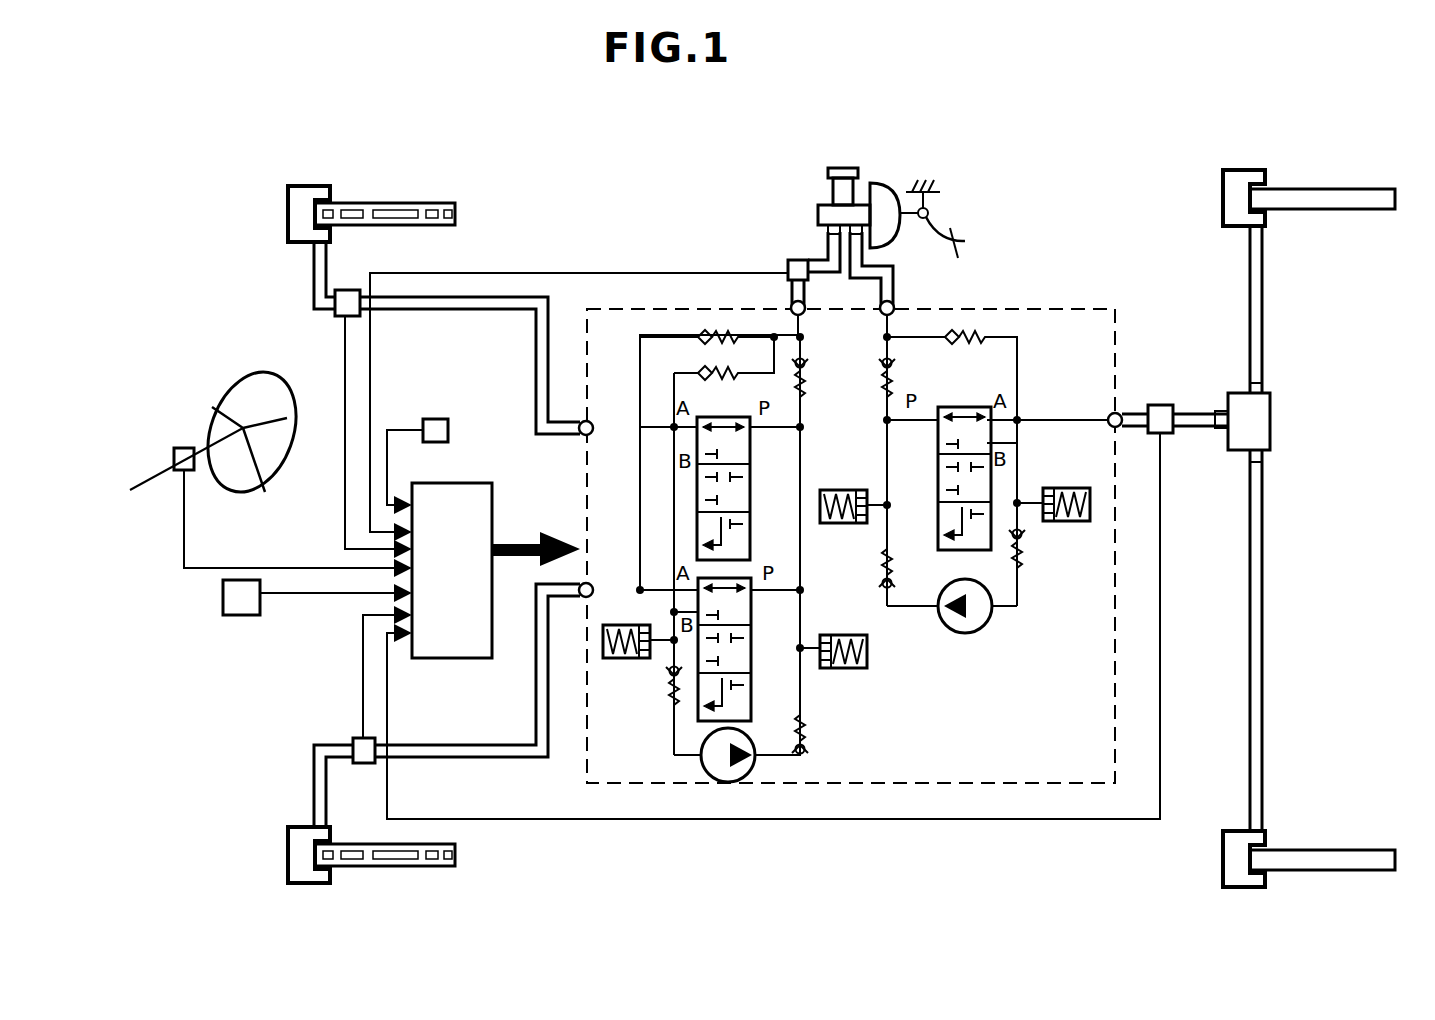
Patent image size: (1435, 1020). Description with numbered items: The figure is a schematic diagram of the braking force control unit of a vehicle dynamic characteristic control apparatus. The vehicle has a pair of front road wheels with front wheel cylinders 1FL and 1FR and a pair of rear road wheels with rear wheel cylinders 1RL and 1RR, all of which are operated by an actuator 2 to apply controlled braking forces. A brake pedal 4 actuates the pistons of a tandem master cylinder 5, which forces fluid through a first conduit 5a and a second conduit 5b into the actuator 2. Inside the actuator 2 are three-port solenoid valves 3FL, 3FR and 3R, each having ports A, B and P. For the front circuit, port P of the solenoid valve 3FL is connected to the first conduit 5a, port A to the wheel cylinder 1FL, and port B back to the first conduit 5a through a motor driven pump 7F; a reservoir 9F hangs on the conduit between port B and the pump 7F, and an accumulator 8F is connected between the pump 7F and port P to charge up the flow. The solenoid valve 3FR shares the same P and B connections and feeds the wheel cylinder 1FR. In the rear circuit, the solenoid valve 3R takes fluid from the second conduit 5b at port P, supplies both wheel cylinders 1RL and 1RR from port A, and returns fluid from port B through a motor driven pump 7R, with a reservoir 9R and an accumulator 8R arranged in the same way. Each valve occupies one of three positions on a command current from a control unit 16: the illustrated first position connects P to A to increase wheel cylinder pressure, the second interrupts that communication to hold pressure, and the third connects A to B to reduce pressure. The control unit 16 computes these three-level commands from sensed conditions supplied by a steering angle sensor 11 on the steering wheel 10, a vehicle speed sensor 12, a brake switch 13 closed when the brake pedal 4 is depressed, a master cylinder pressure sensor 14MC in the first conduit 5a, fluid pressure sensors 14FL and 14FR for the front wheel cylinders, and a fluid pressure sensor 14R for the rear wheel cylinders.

The front wheel cylinder 1FR is at (318, 190).
The front wheel cylinder 1FL is at (312, 830).
The rear wheel cylinder 1RR is at (1250, 178).
The rear wheel cylinder 1RL is at (1262, 836).
The actuator 2 is at (940, 784).
The solenoid valve 3FR is at (696, 535).
The solenoid valve 3FL is at (697, 700).
The solenoid valve 3R is at (958, 554).
The brake pedal 4 is at (965, 241).
The tandem master cylinder 5 is at (839, 219).
The first conduit 5a is at (830, 250).
The second conduit 5b is at (893, 258).
The motor driven pump 7F is at (706, 775).
The motor driven pump 7R is at (985, 626).
The accumulator 8F is at (836, 635).
The accumulator 8R is at (842, 490).
The reservoir 9F is at (618, 660).
The reservoir 9R is at (1060, 488).
The steering wheel 10 is at (232, 374).
The steering angle sensor 11 is at (183, 447).
The vehicle speed sensor 12 is at (438, 418).
The brake switch 13 is at (238, 616).
The fluid pressure sensor 14FR is at (341, 318).
The fluid pressure sensor 14FL is at (358, 740).
The master cylinder pressure sensor 14MC is at (793, 260).
The fluid pressure sensor 14R is at (1161, 404).
The control unit 16 is at (493, 498).